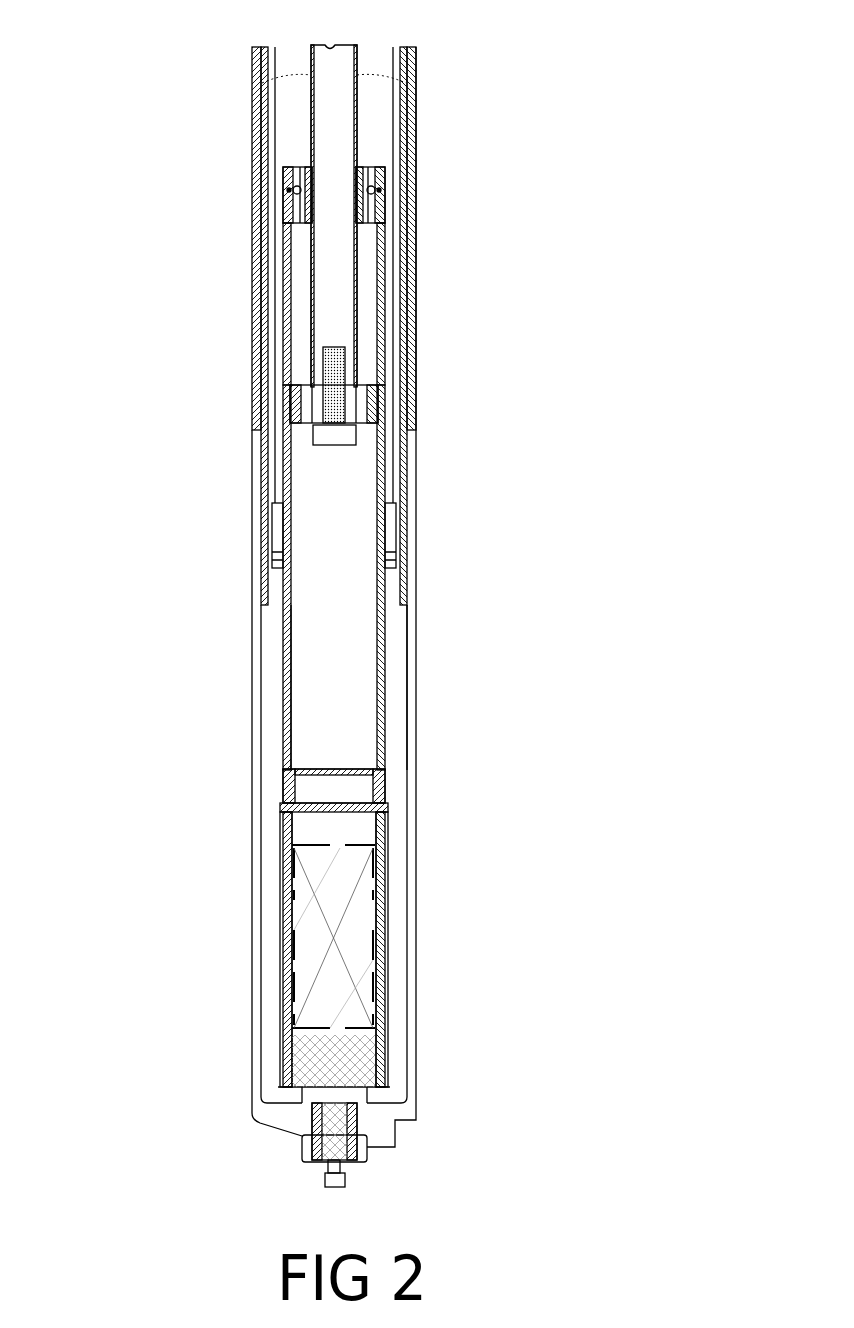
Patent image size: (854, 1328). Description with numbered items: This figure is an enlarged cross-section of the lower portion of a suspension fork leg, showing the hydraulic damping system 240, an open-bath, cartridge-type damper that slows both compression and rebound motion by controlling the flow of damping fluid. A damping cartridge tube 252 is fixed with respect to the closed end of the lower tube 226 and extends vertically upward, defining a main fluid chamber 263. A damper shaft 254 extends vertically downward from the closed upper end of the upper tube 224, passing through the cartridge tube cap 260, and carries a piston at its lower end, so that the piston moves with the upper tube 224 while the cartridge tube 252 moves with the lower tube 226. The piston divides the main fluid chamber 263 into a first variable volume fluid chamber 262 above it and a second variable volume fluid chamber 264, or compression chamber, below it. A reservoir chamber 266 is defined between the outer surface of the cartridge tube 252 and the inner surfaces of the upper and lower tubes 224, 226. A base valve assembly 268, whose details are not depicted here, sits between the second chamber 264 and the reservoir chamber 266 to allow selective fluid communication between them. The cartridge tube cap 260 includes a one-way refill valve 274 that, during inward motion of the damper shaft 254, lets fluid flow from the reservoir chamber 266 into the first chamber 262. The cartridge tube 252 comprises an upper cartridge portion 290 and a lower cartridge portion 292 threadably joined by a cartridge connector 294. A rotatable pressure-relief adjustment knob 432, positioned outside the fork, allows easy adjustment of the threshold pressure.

The upper tube 224 is at (395, 48).
The lower tube 226 is at (253, 912).
The hydraulic damping system 240 is at (568, 258).
The damping cartridge tube 252 is at (387, 646).
The damper shaft 254 is at (345, 143).
The cartridge tube cap 260 is at (283, 167).
The first variable volume fluid chamber 262 is at (368, 302).
The main fluid chamber 263 is at (356, 697).
The second variable volume fluid chamber 264 is at (342, 585).
The reservoir chamber 266 is at (273, 983).
The base valve assembly 268 is at (329, 974).
The one-way refill valve 274 is at (288, 207).
The upper cartridge portion 290 is at (383, 725).
The lower cartridge portion 292 is at (387, 872).
The cartridge connector 294 is at (388, 802).
The rotatable pressure-relief adjustment knob 432 is at (325, 1178).